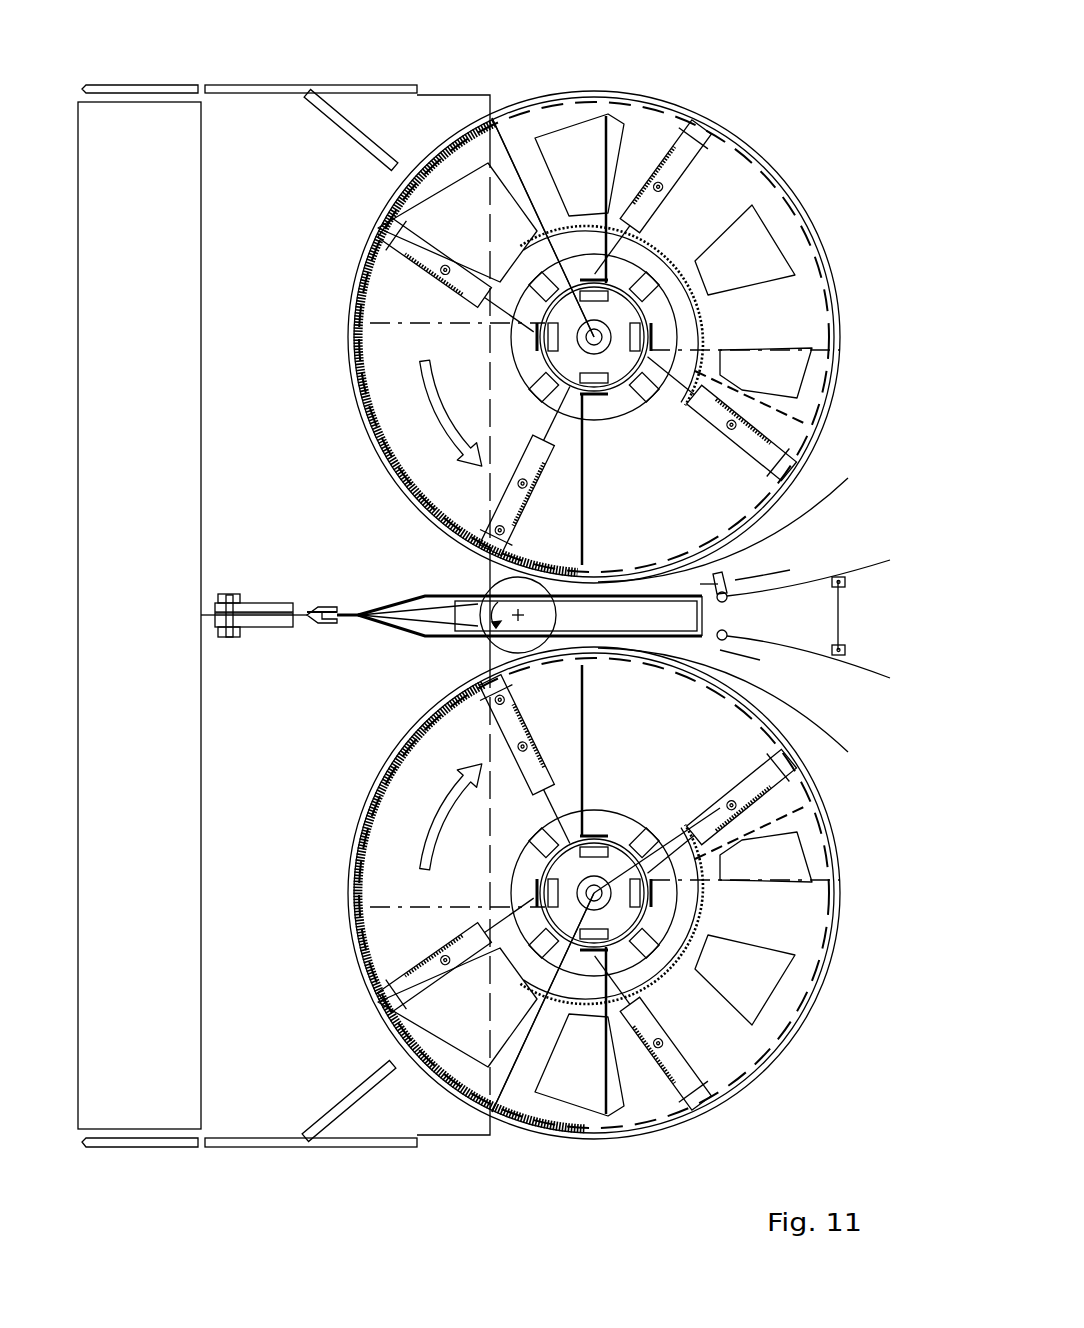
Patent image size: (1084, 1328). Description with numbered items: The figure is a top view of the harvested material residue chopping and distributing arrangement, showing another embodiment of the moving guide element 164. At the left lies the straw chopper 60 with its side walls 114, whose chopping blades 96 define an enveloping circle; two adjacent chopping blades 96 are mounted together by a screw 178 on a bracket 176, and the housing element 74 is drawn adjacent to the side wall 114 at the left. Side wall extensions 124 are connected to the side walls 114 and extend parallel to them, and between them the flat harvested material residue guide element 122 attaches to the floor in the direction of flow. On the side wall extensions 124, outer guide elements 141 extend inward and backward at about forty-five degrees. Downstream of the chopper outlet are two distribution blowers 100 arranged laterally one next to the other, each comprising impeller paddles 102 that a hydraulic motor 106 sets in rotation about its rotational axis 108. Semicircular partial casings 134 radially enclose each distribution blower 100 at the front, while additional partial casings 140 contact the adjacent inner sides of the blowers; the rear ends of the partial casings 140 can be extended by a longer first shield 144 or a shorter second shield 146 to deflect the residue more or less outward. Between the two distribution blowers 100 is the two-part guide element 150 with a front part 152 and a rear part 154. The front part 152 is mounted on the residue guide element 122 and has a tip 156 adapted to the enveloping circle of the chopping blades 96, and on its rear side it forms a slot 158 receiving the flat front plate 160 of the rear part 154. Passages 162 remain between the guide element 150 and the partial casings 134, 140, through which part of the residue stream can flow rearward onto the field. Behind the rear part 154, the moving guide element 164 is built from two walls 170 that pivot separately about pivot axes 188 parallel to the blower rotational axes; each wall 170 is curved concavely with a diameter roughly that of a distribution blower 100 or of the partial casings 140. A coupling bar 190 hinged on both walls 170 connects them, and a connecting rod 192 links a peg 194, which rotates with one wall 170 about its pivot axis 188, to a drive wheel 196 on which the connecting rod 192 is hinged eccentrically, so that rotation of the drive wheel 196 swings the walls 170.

The straw chopper 60 is at (222, 746).
The side wall 74 is at (205, 455).
The chopping blades 96 is at (270, 606).
The distribution blower 100 is at (845, 246).
The impeller paddles 102 is at (565, 745).
The hydraulic motor 106 is at (594, 337).
The rotational axis 108 is at (600, 316).
The side walls 114 is at (132, 88).
The harvested material residue guide element 122 is at (230, 280).
The side wall extensions 124 is at (253, 92).
The partial casings 134 is at (352, 352).
The partial casings 140 is at (742, 570).
The outer guide elements 141 is at (360, 148).
The first shield 144 is at (532, 103).
The second shield 146 is at (807, 473).
The guide element 150 is at (364, 642).
The front part 152 is at (318, 611).
The rear part 154 is at (450, 595).
The tip 156 is at (295, 626).
The slot 158 is at (328, 626).
The front plate 160 is at (346, 610).
The passages 162 is at (606, 588).
The moving guide element 164 is at (860, 618).
The walls 170 is at (848, 578).
The bracket 176 is at (222, 596).
The screw 178 is at (229, 593).
The pivot axes 188 is at (728, 600).
The coupling bar 190 is at (850, 592).
The connecting rod 192 is at (712, 580).
The peg 194 is at (730, 580).
The drive wheel 196 is at (480, 637).